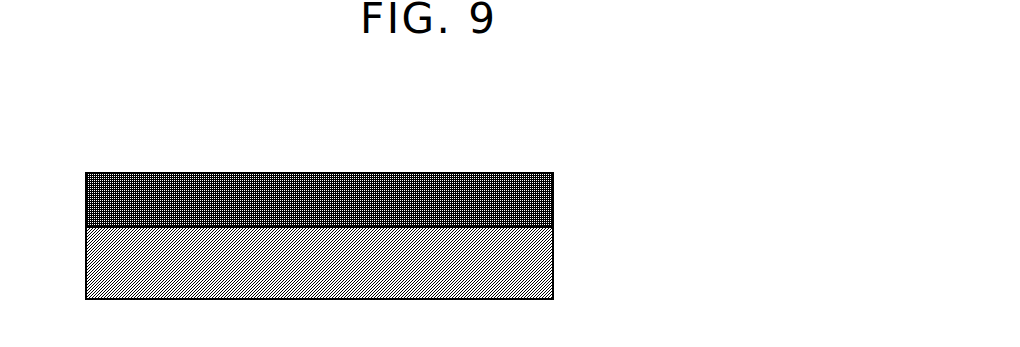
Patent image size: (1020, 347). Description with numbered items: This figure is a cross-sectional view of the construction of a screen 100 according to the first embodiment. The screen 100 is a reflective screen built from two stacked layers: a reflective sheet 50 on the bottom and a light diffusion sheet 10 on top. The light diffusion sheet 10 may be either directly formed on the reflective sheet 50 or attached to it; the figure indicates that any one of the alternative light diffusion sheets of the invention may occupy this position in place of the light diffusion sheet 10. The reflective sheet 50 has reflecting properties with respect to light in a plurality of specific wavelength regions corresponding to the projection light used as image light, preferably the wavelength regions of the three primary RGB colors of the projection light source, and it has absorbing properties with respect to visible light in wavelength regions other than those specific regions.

The screen 100 is at (324, 143).
The light diffusion sheet 10 is at (540, 199).
The reflective sheet 50 is at (540, 263).